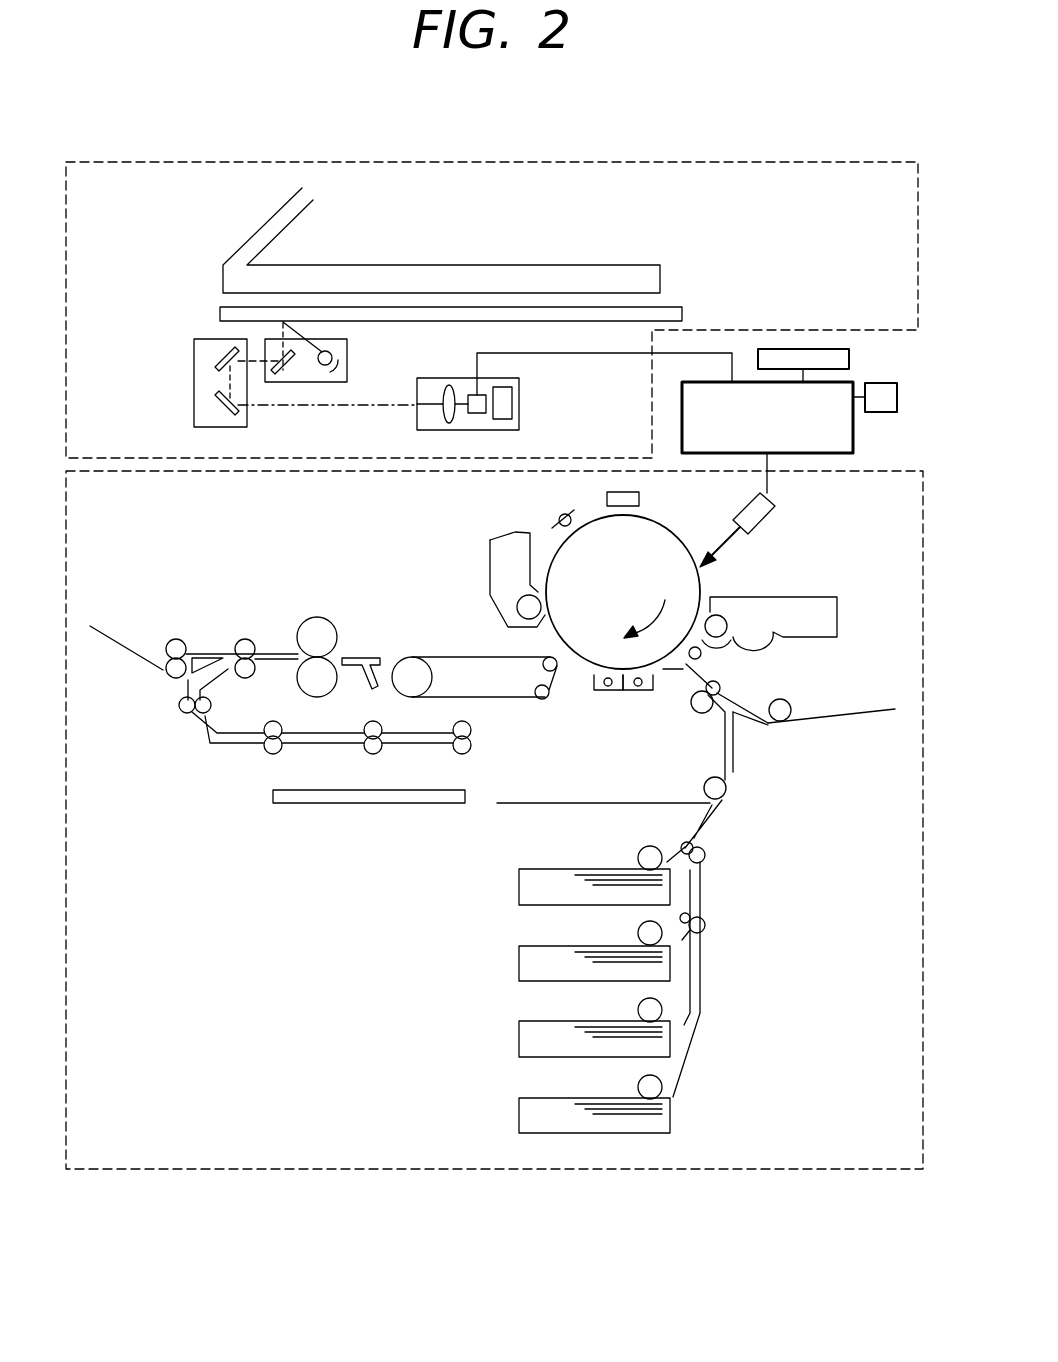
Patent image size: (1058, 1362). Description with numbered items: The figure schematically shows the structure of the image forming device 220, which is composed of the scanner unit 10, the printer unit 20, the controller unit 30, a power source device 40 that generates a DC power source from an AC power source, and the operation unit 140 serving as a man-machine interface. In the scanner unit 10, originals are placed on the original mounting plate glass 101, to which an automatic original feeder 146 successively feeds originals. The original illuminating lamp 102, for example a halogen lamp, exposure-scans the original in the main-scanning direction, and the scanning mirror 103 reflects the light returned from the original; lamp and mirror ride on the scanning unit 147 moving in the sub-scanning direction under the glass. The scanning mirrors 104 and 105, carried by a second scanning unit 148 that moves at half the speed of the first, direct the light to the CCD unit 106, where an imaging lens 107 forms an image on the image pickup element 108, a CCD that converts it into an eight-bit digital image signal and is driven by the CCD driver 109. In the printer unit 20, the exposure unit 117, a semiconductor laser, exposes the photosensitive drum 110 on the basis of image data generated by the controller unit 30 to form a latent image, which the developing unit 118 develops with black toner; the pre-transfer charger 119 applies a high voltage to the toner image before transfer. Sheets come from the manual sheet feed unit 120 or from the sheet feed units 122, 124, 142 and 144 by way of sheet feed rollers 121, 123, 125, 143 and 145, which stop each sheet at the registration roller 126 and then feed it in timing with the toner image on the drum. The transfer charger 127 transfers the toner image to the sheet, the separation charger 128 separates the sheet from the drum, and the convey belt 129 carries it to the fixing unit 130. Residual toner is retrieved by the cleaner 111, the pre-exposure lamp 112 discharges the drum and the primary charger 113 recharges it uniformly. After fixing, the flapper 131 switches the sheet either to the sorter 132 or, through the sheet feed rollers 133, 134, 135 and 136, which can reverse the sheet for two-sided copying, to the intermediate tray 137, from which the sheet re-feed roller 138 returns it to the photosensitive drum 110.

The image forming device 220 is at (763, 108).
The scanner unit 10 is at (850, 162).
The printer unit 20 is at (131, 1170).
The controller unit 30 is at (853, 430).
The power source device 40 is at (898, 402).
The original mounting plate glass 101 is at (684, 314).
The original illuminating lamp 102 is at (333, 358).
The scanning mirror 103 is at (288, 382).
The scanning mirror 104 is at (212, 355).
The scanning mirror 105 is at (215, 407).
The CCD unit 106 is at (520, 392).
The imaging lens 107 is at (417, 400).
The image pickup element 108 is at (470, 395).
The CCD driver 109 is at (513, 410).
The photosensitive drum 110 is at (703, 575).
The cleaner 111 is at (490, 546).
The pre-exposure lamp 112 is at (558, 522).
The primary charger 113 is at (640, 499).
The exposure unit 117 is at (772, 518).
The developing unit 118 is at (810, 597).
The pre-transfer charger 119 is at (702, 656).
The manual sheet feed unit 120 is at (860, 712).
The sheet feed roller 121 is at (785, 700).
The sheet feed unit 122 is at (519, 882).
The sheet feed roller 123 is at (638, 858).
The sheet feed unit 124 is at (519, 958).
The sheet feed roller 125 is at (638, 933).
The registration roller 126 is at (702, 713).
The transfer charger 127 is at (641, 692).
The separation charger 128 is at (602, 692).
The convey belt 129 is at (442, 658).
The fixing unit 130 is at (318, 617).
The flapper 131 is at (207, 652).
The sorter 132 is at (130, 648).
The sheet feed roller 133 is at (212, 705).
The sheet feed roller 134 is at (266, 750).
The sheet feed roller 135 is at (366, 750).
The sheet feed roller 136 is at (455, 750).
The intermediate tray 137 is at (300, 804).
The sheet re-feed roller 138 is at (727, 790).
The operation unit 140 is at (825, 349).
The sheet feed unit 142 is at (519, 1033).
The sheet feed roller 143 is at (638, 1010).
The sheet feed unit 144 is at (519, 1110).
The sheet feed roller 145 is at (638, 1087).
The automatic original feeder 146 is at (257, 228).
The scanning unit 147 is at (333, 382).
The scanning unit 148 is at (194, 390).